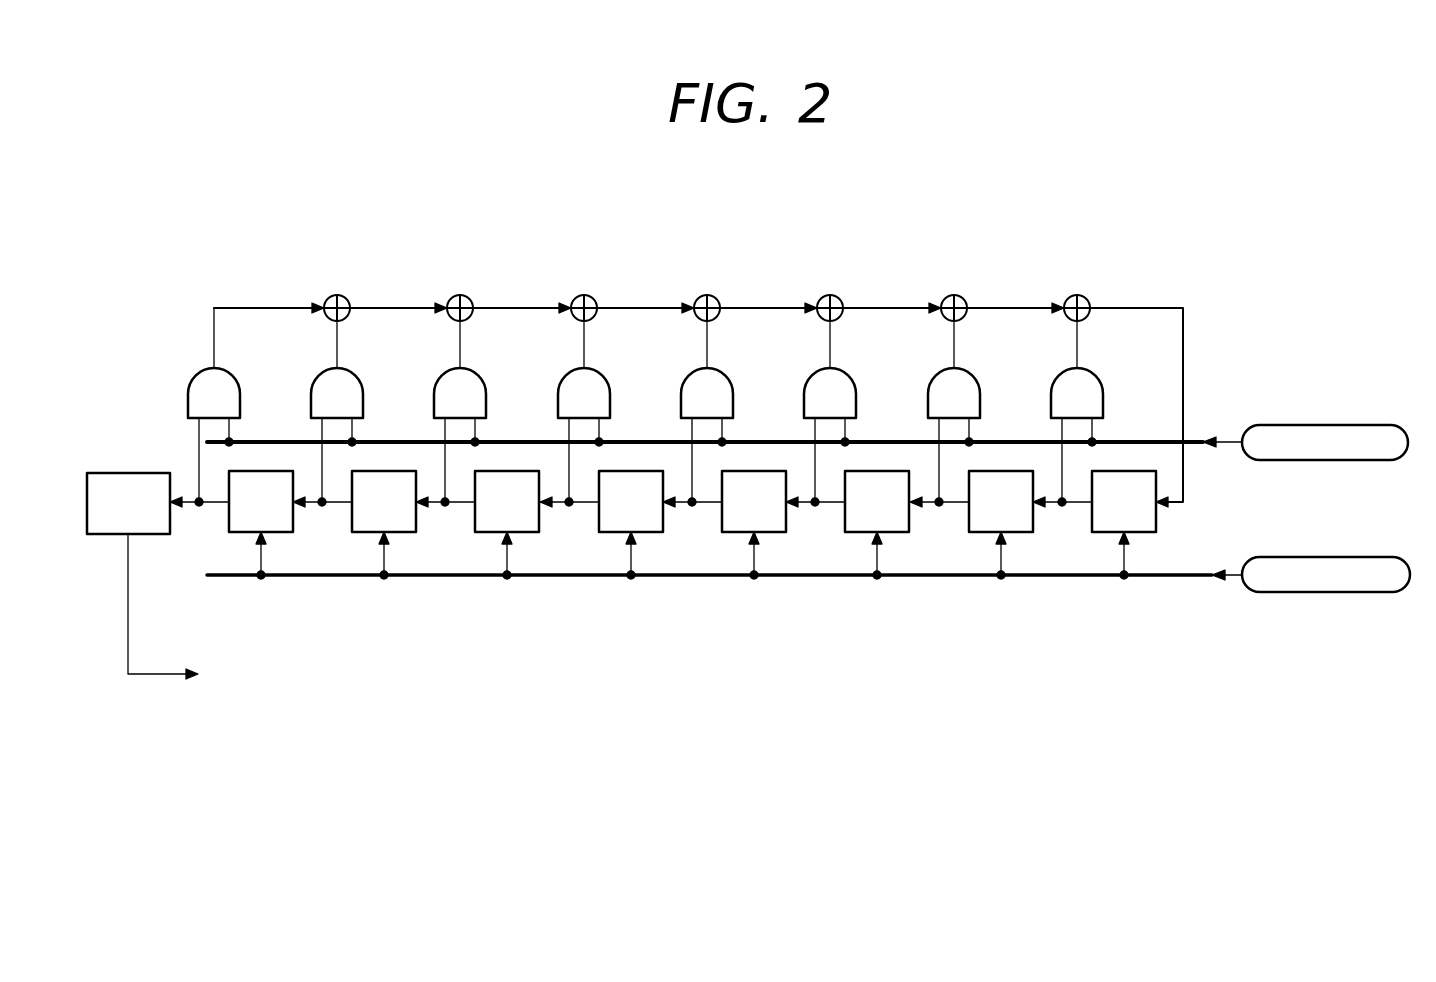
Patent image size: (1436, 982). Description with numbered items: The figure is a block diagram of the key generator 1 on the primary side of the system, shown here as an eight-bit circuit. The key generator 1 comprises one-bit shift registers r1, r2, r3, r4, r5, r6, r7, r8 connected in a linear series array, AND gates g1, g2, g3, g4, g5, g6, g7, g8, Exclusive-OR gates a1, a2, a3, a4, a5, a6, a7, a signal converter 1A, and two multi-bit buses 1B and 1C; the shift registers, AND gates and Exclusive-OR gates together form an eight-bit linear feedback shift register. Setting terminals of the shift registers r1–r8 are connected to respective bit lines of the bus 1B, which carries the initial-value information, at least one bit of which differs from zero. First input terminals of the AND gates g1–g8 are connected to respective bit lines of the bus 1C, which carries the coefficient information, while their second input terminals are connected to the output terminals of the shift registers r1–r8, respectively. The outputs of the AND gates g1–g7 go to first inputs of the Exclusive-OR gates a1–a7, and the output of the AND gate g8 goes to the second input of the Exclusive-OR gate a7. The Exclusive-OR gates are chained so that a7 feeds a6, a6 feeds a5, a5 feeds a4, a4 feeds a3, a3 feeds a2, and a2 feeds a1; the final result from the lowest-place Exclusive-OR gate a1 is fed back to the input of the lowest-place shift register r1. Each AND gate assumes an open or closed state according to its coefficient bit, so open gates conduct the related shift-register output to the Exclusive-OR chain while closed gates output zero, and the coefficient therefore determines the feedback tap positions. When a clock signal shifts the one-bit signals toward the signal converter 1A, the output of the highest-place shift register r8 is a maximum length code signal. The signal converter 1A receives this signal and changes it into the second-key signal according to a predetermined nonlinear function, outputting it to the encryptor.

The key generator 1 is at (1042, 214).
The signal converter 1A is at (131, 471).
The bus 1B is at (1047, 578).
The bus 1C is at (1190, 440).
The Exclusive-OR gate a1 is at (1078, 295).
The Exclusive-OR gate a2 is at (955, 295).
The Exclusive-OR gate a3 is at (831, 295).
The Exclusive-OR gate a4 is at (708, 295).
The Exclusive-OR gate a5 is at (585, 295).
The Exclusive-OR gate a6 is at (461, 295).
The Exclusive-OR gate a7 is at (338, 295).
The AND gate g1 is at (1054, 385).
The AND gate g2 is at (931, 385).
The AND gate g3 is at (807, 385).
The AND gate g4 is at (684, 385).
The AND gate g5 is at (561, 385).
The AND gate g6 is at (437, 385).
The AND gate g7 is at (314, 385).
The AND gate g8 is at (191, 385).
The shift register r1 is at (1093, 522).
The shift register r2 is at (970, 522).
The shift register r3 is at (846, 522).
The shift register r4 is at (723, 522).
The shift register r5 is at (600, 522).
The shift register r6 is at (476, 522).
The shift register r7 is at (353, 522).
The shift register r8 is at (230, 522).